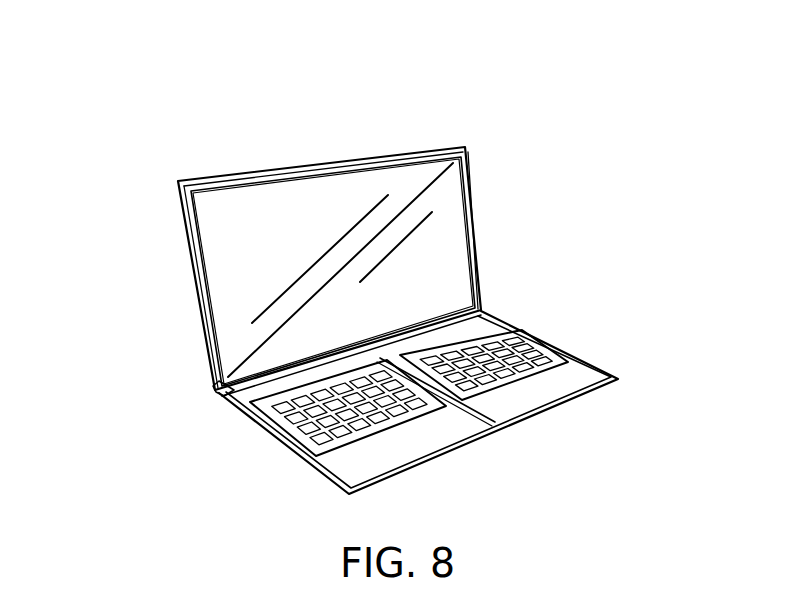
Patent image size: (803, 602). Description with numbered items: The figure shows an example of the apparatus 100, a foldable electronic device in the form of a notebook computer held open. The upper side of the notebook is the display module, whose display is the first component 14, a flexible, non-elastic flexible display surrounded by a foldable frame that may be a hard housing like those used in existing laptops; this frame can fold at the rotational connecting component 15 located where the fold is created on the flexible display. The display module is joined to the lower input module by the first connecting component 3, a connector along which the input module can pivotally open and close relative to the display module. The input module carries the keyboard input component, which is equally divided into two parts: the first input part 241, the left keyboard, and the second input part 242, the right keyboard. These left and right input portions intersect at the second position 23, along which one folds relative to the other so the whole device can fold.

The apparatus 100 is at (78, 78).
The rotational connecting component 15 is at (340, 165).
The first component 14 is at (463, 186).
The first connecting component 3 is at (220, 387).
The second position 23 is at (540, 416).
The first input part 241 is at (330, 413).
The second input part 242 is at (543, 343).